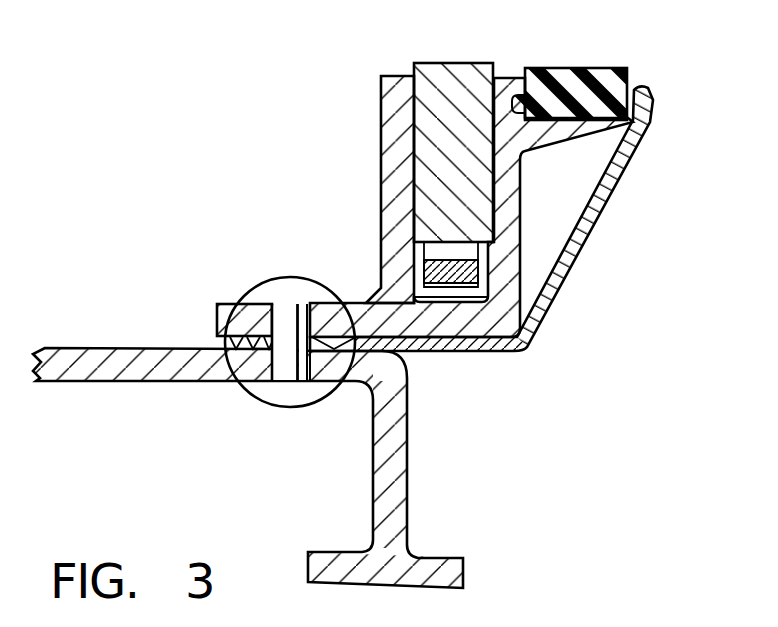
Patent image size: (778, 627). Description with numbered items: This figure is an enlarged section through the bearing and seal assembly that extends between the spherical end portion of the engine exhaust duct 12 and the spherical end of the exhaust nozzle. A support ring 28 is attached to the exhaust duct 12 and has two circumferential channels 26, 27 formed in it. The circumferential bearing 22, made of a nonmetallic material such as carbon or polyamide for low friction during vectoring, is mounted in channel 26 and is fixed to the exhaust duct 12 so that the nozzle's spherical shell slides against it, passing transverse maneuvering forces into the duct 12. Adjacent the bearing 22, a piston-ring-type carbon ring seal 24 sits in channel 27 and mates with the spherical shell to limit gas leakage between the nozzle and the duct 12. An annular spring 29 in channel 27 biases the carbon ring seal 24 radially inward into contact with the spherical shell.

The engine exhaust duct 12 is at (127, 358).
The circumferential bearing 22 is at (622, 72).
The carbon ring seal 24 is at (449, 82).
The circumferential channel 26 is at (553, 112).
The circumferential channel 27 is at (471, 303).
The support ring 28 is at (394, 113).
The annular spring 29 is at (420, 278).